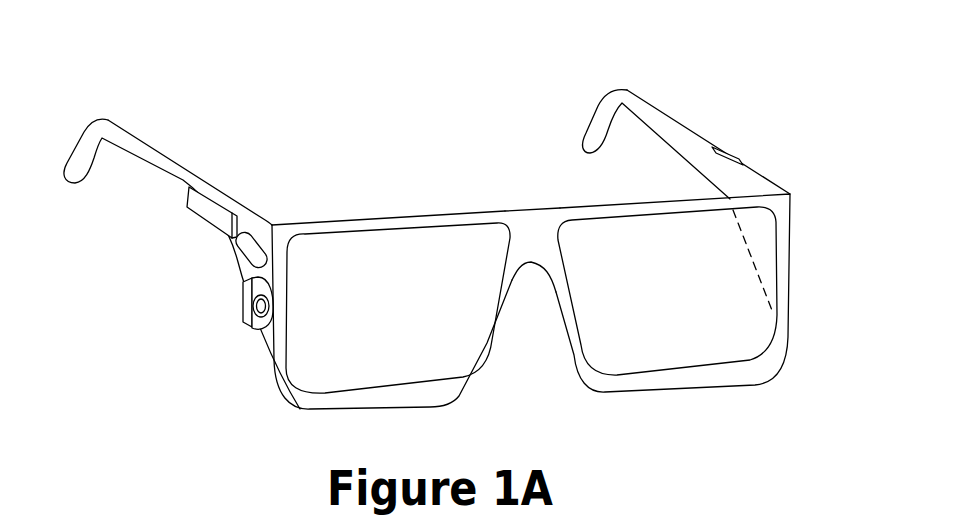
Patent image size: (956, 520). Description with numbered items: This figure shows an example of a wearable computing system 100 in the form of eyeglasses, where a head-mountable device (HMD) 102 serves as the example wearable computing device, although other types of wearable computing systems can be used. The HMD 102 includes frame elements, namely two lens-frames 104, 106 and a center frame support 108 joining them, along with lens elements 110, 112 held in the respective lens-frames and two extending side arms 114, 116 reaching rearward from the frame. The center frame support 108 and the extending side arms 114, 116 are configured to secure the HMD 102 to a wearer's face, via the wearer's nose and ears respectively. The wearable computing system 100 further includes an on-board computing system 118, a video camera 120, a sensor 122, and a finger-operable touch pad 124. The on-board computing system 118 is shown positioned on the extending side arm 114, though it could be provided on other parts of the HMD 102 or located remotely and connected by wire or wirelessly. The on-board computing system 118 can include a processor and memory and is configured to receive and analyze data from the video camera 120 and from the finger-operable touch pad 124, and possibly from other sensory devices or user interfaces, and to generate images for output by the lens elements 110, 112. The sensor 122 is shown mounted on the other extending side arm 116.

The wearable computing system 100 is at (383, 128).
The head-mountable device 102 is at (673, 87).
The lens-frame 104 is at (367, 223).
The lens-frame 106 is at (610, 207).
The center frame support 108 is at (533, 232).
The lens element 110 is at (340, 372).
The lens element 112 is at (683, 357).
The extending side arm 114 is at (207, 190).
The extending side arm 116 is at (687, 131).
The on-board computing system 118 is at (203, 207).
The video camera 120 is at (243, 297).
The sensor 122 is at (733, 155).
The finger-operable touch pad 124 is at (243, 250).